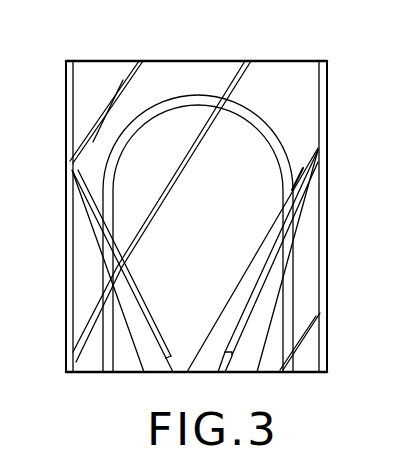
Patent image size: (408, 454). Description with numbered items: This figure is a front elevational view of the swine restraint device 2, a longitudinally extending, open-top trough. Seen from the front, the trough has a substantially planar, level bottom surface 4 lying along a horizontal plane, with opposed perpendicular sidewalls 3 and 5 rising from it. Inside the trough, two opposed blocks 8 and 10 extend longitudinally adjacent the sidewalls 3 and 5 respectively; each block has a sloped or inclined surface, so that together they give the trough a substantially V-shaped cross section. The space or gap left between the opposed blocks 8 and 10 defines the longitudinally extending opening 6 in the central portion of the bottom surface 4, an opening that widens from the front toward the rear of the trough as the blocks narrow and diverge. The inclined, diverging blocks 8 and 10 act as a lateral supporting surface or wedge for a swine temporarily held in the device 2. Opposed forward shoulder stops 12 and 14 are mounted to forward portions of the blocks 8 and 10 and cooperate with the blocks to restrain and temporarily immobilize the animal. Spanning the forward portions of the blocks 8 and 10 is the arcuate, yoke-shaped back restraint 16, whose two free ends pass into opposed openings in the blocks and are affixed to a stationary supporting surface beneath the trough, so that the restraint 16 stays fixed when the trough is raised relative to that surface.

The swine restraint device 2 is at (346, 236).
The sidewall 3 is at (327, 127).
The bottom surface 4 is at (184, 364).
The sidewall 5 is at (66, 141).
The opening 6 is at (216, 364).
The block 8 is at (263, 320).
The block 10 is at (127, 330).
The forward shoulder stop 12 is at (249, 298).
The forward shoulder stop 14 is at (152, 301).
The back restraint 16 is at (185, 95).